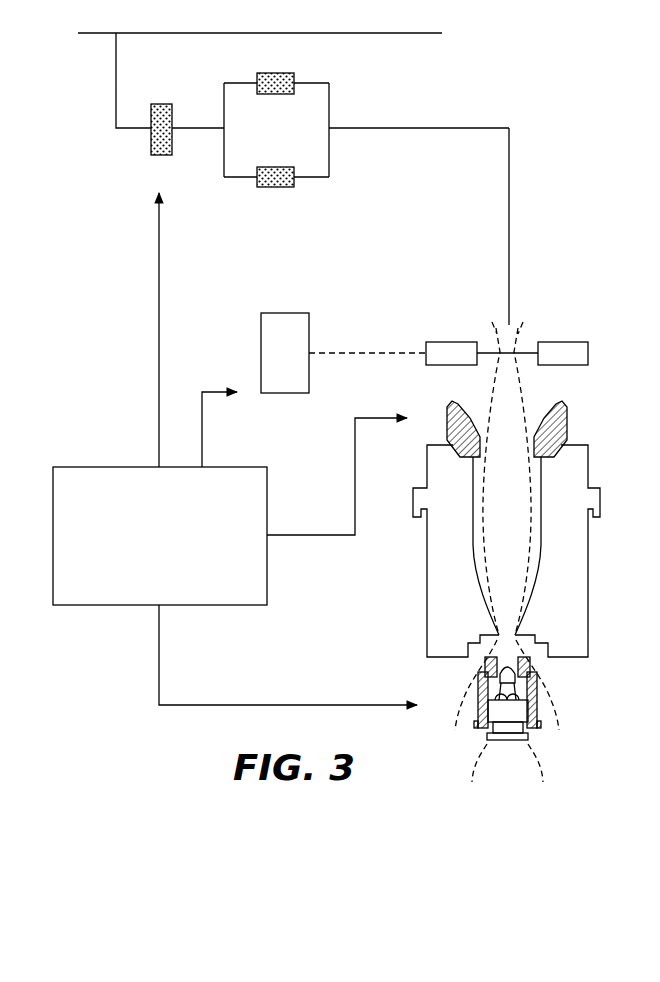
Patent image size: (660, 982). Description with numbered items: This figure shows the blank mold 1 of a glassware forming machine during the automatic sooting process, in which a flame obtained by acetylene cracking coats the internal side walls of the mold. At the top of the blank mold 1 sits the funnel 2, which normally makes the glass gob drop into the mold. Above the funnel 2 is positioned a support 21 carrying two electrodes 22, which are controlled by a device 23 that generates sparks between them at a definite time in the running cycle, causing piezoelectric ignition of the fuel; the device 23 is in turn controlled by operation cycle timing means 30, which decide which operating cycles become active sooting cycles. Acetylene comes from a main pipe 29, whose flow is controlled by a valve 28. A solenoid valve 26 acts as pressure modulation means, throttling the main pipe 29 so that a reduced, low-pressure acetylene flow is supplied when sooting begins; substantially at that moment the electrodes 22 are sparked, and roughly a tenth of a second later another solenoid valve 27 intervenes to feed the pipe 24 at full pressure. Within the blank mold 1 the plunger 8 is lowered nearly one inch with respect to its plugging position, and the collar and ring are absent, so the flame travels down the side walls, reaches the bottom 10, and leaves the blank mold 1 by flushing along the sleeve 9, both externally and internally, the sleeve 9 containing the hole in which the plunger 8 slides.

The blank mold 1 is at (426, 590).
The funnel 2 is at (567, 420).
The plunger 8 is at (518, 712).
The sleeve 9 is at (476, 724).
The bottom 10 is at (492, 620).
The support 21 is at (445, 341).
The electrodes 22 is at (488, 390).
The device 23 is at (290, 396).
The pipe 24 is at (511, 206).
The solenoid valve 26 is at (253, 68).
The solenoid valve 27 is at (256, 193).
The valve 28 is at (146, 160).
The main pipe 29 is at (260, 19).
The operation cycle timing means 30 is at (86, 600).